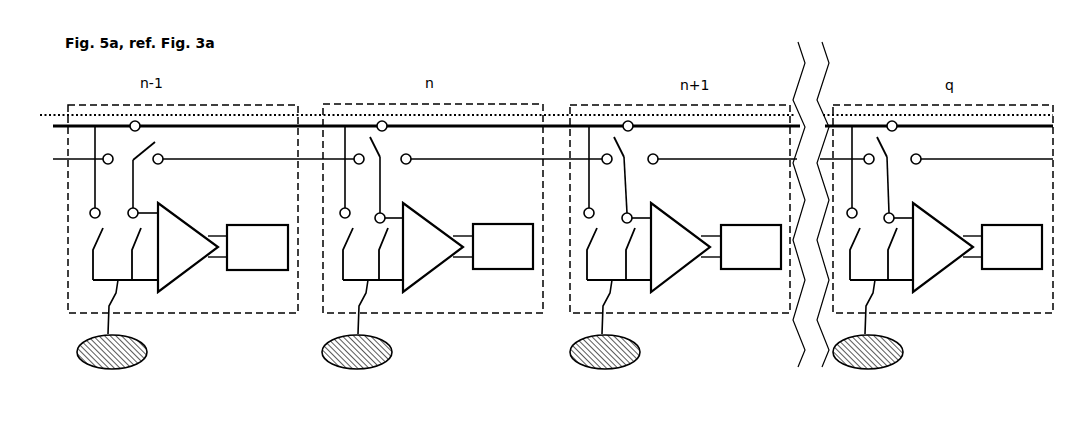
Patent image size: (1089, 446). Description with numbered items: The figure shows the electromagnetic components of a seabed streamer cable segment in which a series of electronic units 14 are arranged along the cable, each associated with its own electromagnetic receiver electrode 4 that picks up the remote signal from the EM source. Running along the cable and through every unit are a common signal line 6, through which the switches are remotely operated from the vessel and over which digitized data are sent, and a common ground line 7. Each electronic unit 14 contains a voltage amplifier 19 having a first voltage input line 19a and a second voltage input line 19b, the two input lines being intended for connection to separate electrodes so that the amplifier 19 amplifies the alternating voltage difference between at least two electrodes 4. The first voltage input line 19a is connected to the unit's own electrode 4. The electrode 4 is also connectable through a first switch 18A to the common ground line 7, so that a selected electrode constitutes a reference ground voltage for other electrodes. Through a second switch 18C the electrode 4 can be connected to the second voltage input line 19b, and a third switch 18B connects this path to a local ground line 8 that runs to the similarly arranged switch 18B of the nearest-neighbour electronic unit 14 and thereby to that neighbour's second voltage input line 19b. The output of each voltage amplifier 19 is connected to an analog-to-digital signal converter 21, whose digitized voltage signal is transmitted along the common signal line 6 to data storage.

The electrode 4 is at (490, 335).
The common signal line 6 is at (546, 89).
The common ground line 7 is at (553, 97).
The local ground line 8 is at (553, 151).
The electronic unit 14 is at (560, 179).
The first switch 18A is at (466, 203).
The third switch 18B is at (513, 142).
The second switch 18C is at (503, 218).
The voltage amplifier 19 is at (565, 247).
The first voltage input line 19a is at (548, 273).
The second voltage input line 19b is at (537, 224).
The analog-to-digital signal converter 21 is at (625, 247).